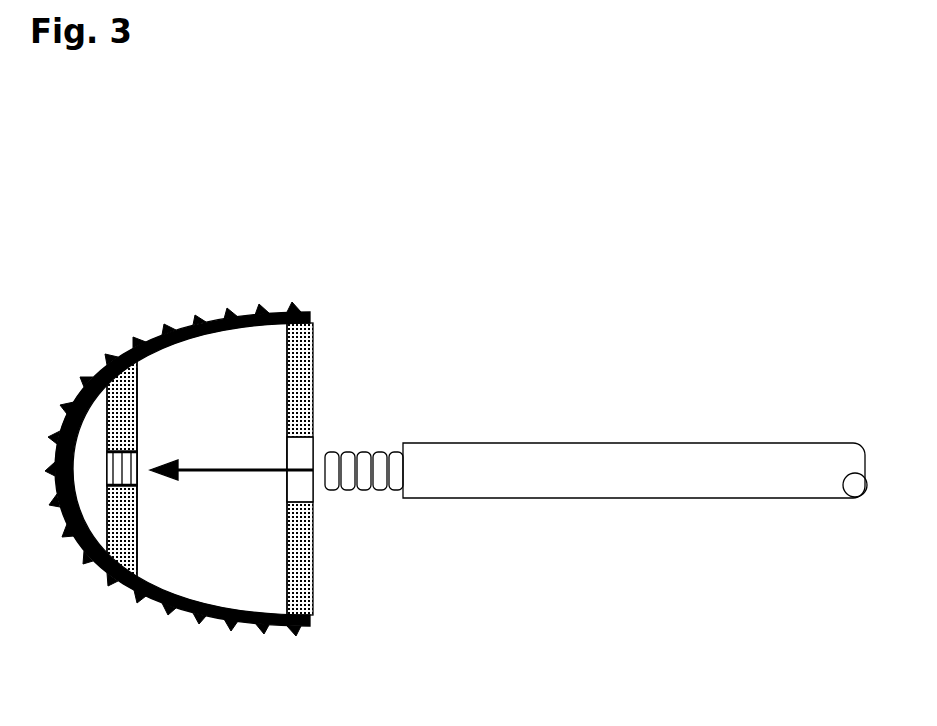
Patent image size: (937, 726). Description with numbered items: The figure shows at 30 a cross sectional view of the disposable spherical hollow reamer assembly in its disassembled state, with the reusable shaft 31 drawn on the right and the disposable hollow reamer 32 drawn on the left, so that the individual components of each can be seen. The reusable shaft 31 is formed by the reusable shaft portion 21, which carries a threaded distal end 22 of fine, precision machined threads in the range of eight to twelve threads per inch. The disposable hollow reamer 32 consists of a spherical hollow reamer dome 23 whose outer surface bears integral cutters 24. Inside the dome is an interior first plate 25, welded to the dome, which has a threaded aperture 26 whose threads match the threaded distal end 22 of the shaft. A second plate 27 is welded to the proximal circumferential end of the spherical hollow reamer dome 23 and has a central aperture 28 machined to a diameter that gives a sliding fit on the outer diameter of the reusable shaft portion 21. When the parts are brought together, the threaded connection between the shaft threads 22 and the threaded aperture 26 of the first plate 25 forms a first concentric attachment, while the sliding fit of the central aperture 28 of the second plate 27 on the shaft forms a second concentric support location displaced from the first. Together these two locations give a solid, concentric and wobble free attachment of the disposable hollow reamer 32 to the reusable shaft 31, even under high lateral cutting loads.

The reusable shaft portion 21 is at (612, 443).
The threaded distal end 22 is at (347, 445).
The spherical hollow reamer dome 23 is at (238, 302).
The integral cutters 24 is at (170, 312).
The interior first plate 25 is at (140, 525).
The threaded aperture 26 is at (107, 440).
The second plate 27 is at (285, 380).
The central aperture 28 is at (287, 437).
The disassembled disposable spherical hollow reamer assembly 30 is at (398, 182).
The reusable shaft 31 is at (505, 407).
The disposable hollow reamer 32 is at (108, 320).